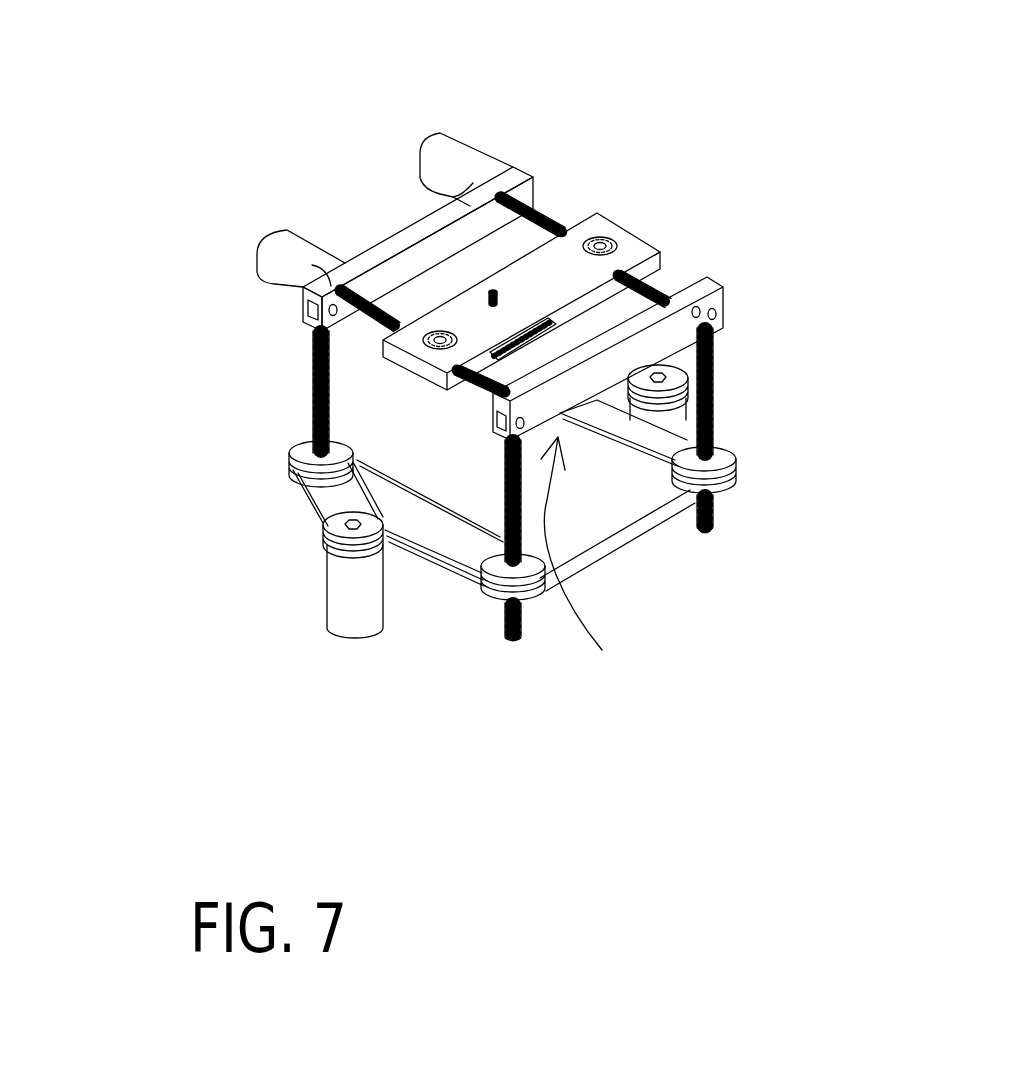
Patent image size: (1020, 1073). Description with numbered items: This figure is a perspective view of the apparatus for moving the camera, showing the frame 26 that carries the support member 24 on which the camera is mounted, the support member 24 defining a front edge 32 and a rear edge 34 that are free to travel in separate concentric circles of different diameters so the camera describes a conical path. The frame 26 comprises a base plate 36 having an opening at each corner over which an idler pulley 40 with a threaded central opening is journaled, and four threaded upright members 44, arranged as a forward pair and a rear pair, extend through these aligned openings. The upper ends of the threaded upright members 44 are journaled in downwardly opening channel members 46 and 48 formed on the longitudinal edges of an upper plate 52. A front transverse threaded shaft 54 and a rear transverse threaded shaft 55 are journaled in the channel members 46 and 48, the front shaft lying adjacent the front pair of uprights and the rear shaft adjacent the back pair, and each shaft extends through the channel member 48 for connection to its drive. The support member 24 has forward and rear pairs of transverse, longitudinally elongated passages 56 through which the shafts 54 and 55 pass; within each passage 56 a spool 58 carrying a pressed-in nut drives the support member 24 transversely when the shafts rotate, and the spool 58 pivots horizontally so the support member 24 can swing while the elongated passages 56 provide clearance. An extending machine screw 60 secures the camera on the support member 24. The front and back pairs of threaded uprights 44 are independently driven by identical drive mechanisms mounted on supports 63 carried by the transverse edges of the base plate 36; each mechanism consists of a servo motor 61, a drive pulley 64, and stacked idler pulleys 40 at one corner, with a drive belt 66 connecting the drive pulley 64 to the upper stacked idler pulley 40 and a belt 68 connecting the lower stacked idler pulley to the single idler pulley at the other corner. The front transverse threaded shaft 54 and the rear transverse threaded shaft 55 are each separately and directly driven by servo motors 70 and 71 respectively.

The support member 24 is at (580, 195).
The frame 26 is at (589, 566).
The front edge 32 is at (289, 201).
The rear edge 34 is at (660, 268).
The base plate 36 is at (593, 523).
The idler pulley 40 is at (303, 447).
The threaded upright member 44 is at (313, 372).
The channel member 46 is at (690, 330).
The channel member 48 is at (380, 250).
The upper plate 52 is at (582, 223).
The front transverse threaded shaft 54 is at (427, 267).
The rear transverse threaded shaft 55 is at (520, 205).
The elongated passage 56 is at (655, 275).
The spool 58 is at (606, 245).
The machine screw 60 is at (498, 296).
The servo motor 61 is at (665, 420).
The support 63 is at (387, 560).
The drive pulley 64 is at (690, 375).
The drive belt 66 is at (283, 477).
The belt 68 is at (417, 573).
The servo motor 70 is at (280, 257).
The servo motor 71 is at (447, 153).